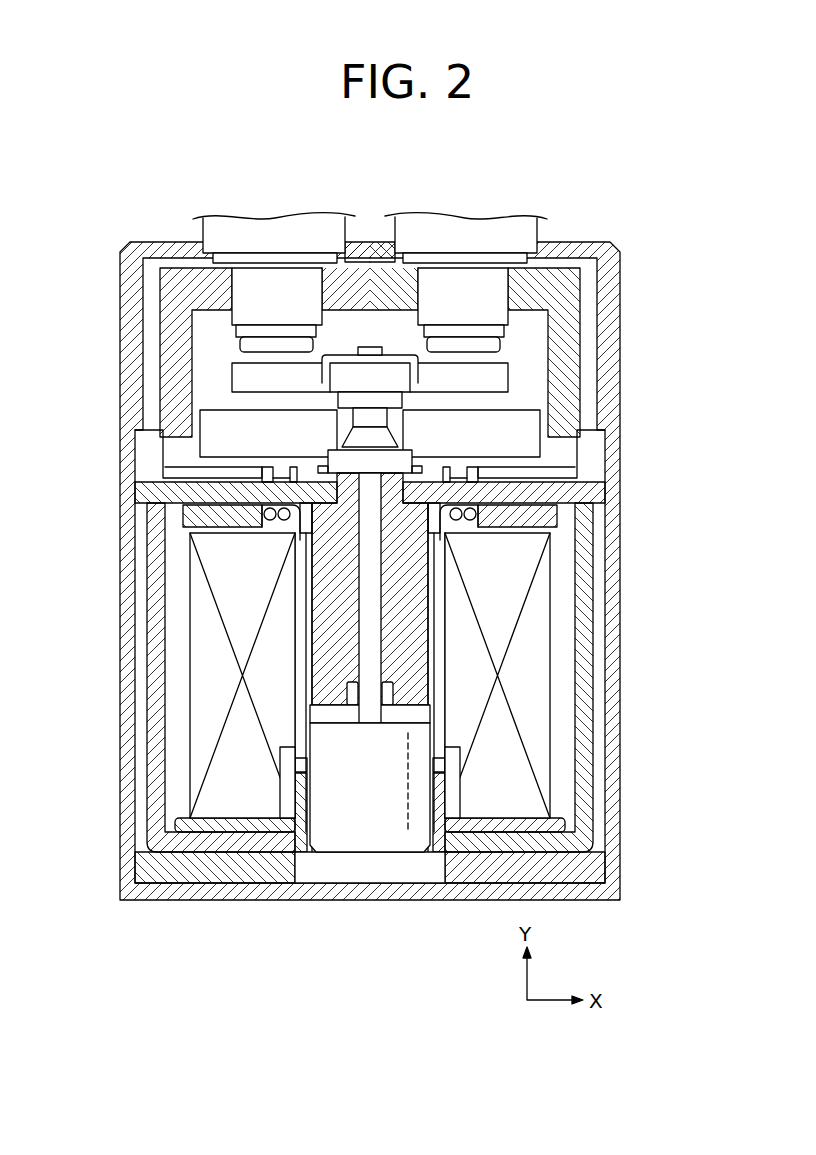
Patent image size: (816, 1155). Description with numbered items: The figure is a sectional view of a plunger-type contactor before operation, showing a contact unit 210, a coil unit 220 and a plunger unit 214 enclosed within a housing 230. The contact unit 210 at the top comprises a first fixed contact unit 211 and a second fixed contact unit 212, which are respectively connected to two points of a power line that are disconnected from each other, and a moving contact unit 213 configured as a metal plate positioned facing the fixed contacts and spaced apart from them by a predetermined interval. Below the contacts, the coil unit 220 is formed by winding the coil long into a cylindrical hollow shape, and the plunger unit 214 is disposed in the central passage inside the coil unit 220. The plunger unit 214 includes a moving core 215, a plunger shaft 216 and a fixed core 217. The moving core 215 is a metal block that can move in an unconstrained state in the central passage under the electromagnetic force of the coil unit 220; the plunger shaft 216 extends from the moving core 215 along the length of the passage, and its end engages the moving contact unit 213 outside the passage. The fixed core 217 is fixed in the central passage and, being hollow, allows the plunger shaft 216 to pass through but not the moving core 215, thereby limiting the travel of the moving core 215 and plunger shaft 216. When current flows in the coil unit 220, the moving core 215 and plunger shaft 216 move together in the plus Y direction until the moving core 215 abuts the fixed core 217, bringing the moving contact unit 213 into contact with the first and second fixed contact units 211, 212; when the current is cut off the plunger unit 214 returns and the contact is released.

The contact unit 210 is at (517, 330).
The first fixed contact unit 211 is at (273, 241).
The second fixed contact unit 212 is at (463, 241).
The moving contact unit 213 is at (494, 380).
The plunger unit 214 is at (678, 548).
The moving core 215 is at (390, 752).
The plunger shaft 216 is at (372, 557).
The fixed core 217 is at (412, 608).
The coil unit 220 is at (224, 675).
The housing 230 is at (121, 531).